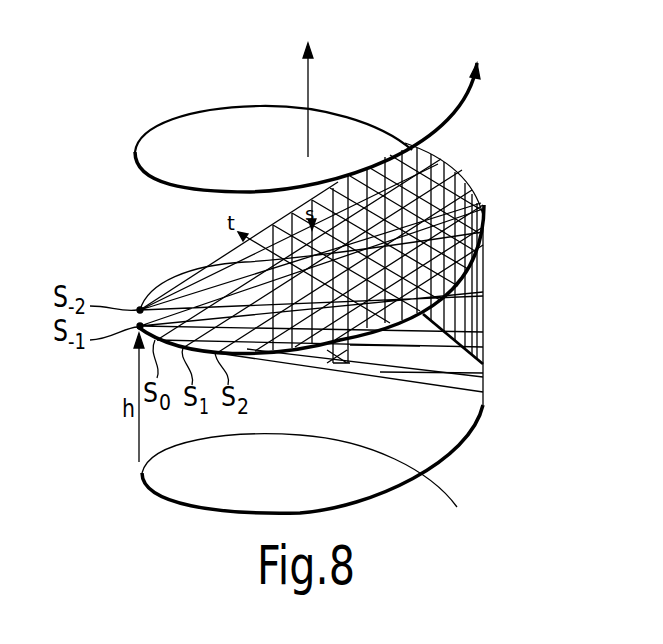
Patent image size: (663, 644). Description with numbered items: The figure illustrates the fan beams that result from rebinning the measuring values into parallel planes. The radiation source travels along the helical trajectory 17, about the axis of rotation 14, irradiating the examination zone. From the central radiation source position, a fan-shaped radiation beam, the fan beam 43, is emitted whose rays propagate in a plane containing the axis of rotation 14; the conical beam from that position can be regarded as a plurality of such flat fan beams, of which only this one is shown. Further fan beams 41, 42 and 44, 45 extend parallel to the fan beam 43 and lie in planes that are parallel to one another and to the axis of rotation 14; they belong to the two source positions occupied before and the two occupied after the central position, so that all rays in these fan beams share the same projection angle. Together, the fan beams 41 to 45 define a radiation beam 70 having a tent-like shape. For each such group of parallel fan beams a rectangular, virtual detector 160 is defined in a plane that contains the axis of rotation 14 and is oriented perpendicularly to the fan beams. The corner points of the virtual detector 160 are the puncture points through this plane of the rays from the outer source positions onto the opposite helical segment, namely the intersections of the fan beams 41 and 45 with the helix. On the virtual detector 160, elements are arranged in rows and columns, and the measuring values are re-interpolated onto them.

The axis of rotation 14 is at (310, 80).
The radiation beam 70 is at (393, 197).
The fan beam 45 is at (205, 270).
The fan beam 44 is at (230, 262).
The virtual detector 160 is at (335, 363).
The fan beam 43 is at (367, 346).
The fan beam 41 is at (413, 382).
The fan beam 42 is at (443, 372).
The helical trajectory 17 is at (457, 500).